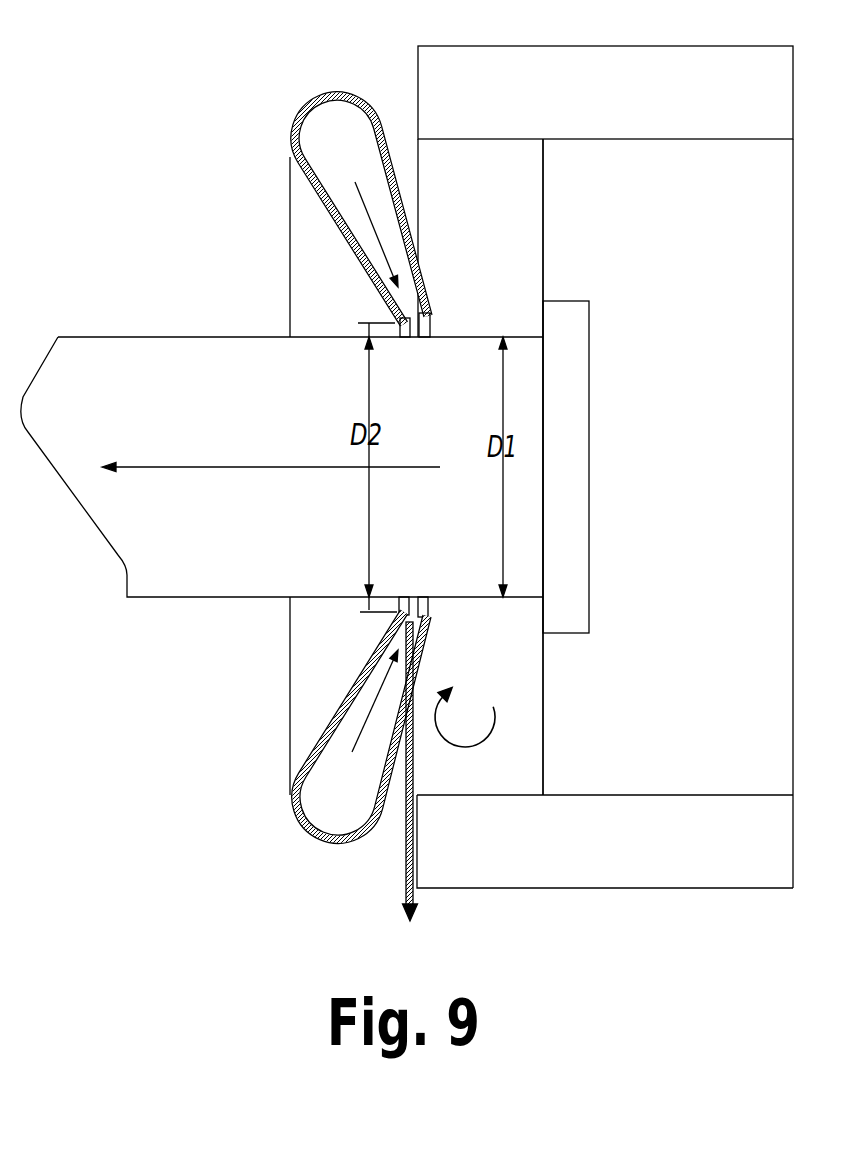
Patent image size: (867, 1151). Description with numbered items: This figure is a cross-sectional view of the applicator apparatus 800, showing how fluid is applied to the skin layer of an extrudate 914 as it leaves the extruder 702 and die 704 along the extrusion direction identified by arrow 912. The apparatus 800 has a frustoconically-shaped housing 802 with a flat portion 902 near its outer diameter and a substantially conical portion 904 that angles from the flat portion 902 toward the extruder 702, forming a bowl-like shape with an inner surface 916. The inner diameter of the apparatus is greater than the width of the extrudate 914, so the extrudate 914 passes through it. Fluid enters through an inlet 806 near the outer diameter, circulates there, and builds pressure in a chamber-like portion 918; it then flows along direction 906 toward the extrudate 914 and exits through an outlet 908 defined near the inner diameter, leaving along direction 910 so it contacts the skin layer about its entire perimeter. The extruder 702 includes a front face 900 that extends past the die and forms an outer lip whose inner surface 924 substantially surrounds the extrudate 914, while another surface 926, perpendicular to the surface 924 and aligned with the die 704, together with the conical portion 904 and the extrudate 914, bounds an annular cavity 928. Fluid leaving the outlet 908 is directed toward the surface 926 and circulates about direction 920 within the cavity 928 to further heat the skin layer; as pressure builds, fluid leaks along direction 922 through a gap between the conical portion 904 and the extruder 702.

The extruder 702 is at (605, 467).
The die 704 is at (575, 432).
The applicator apparatus 800 is at (344, 380).
The housing 802 is at (304, 723).
The inlet 806 is at (361, 210).
The front face 900 is at (413, 131).
The flat portion 902 is at (289, 630).
The conical portion 904 is at (398, 795).
The direction of fluid flow 906 is at (358, 218).
The outlet 908 is at (402, 318).
The direction of fluid exit 910 is at (469, 333).
The extrusion direction arrow 912 is at (228, 467).
The extrudate 914 is at (282, 467).
The inner surface 916 is at (346, 687).
The chamber-like portion 918 is at (361, 725).
The direction of fluid circulation 920 is at (480, 750).
The direction of fluid leakage 922 is at (417, 897).
The inner surface of outer lip 924 is at (453, 141).
The surface 926 is at (542, 262).
The annular cavity 928 is at (480, 467).